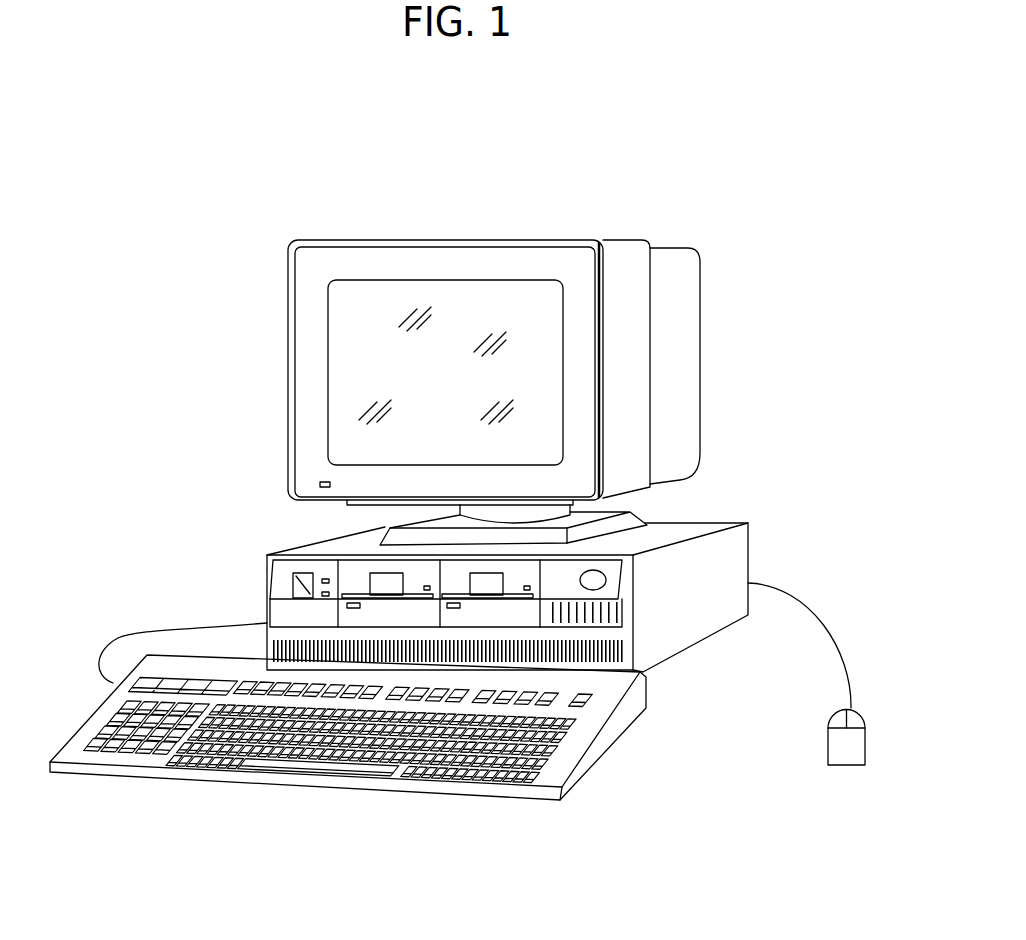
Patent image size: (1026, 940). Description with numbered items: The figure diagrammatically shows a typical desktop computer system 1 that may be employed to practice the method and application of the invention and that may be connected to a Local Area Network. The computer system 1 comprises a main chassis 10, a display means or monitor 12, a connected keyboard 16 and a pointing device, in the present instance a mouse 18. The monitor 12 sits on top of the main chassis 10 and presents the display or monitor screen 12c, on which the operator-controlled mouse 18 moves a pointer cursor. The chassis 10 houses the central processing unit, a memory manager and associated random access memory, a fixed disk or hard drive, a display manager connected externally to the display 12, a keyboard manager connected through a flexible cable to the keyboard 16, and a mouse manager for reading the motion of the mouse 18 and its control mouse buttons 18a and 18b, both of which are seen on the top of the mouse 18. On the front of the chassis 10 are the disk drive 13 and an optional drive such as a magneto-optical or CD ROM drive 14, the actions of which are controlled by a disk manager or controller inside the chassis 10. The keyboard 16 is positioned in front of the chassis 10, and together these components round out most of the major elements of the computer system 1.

The computer system 1 is at (584, 220).
The main chassis 10 is at (476, 541).
The monitor 12 is at (492, 392).
The monitor screen 12c is at (360, 360).
The disk drive 13 is at (393, 578).
The CD ROM drive 14 is at (517, 578).
The keyboard 16 is at (485, 798).
The mouse 18 is at (840, 698).
The mouse button 18a is at (837, 720).
The mouse button 18b is at (860, 715).